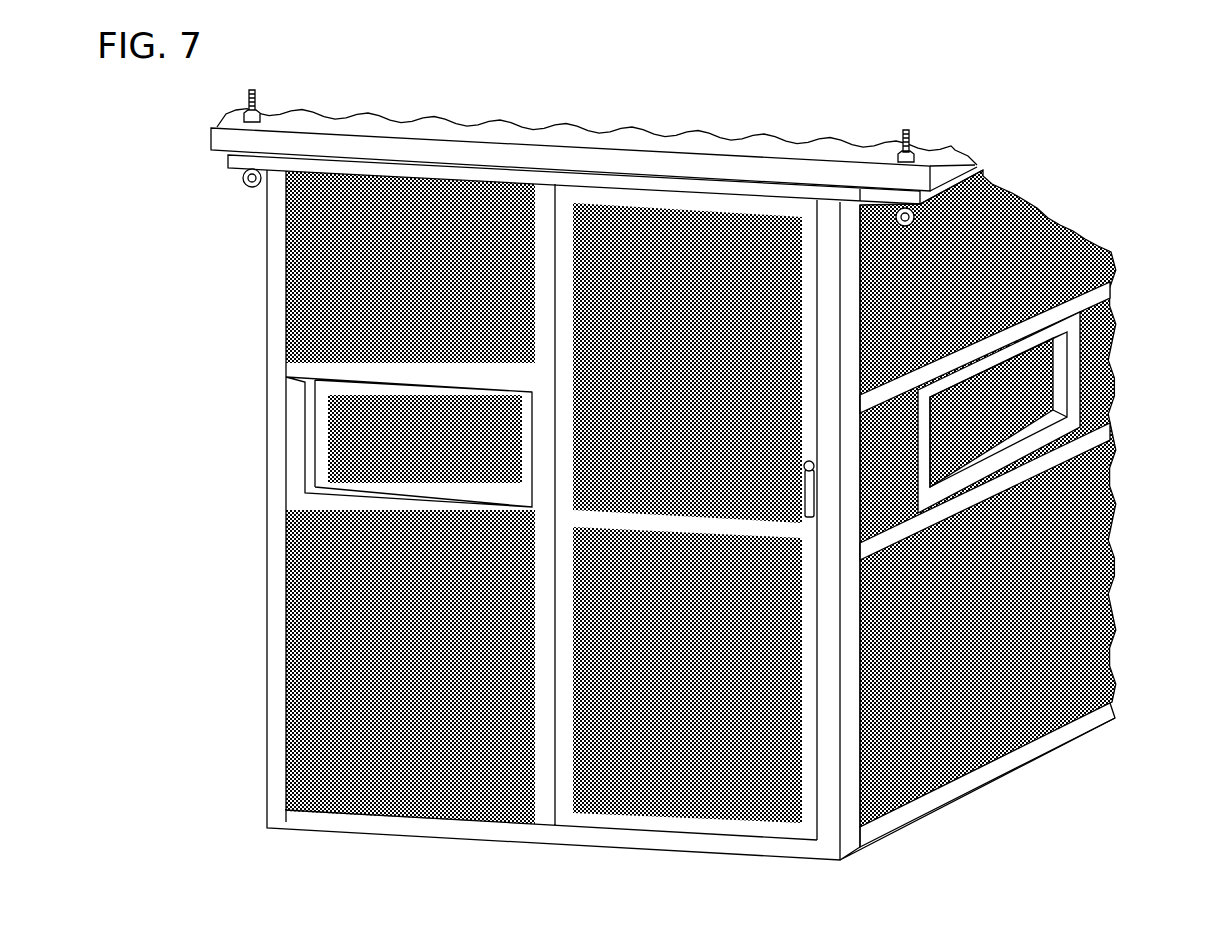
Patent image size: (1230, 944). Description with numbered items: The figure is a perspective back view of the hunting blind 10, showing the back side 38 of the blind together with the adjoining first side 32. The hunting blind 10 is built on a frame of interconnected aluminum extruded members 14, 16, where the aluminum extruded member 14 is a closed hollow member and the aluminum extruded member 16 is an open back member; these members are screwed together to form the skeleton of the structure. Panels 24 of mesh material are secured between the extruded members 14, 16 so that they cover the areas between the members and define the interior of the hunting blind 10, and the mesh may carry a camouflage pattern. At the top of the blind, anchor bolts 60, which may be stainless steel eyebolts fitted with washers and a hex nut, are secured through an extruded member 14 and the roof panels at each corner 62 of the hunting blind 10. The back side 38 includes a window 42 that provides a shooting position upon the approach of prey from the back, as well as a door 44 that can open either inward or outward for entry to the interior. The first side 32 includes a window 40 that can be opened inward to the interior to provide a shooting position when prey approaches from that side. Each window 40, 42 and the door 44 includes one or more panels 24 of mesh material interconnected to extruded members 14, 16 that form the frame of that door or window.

The hunting blind 10 is at (1110, 62).
The aluminum extruded member 14 is at (277, 557).
The aluminum extruded member 16 is at (980, 778).
The panel 24 is at (1110, 593).
The first side 32 is at (1141, 246).
The back side 38 is at (247, 333).
The window 40 is at (1033, 432).
The window 42 is at (328, 457).
The door 44 is at (723, 822).
The anchor bolt 60 is at (248, 188).
The corner 62 is at (232, 123).